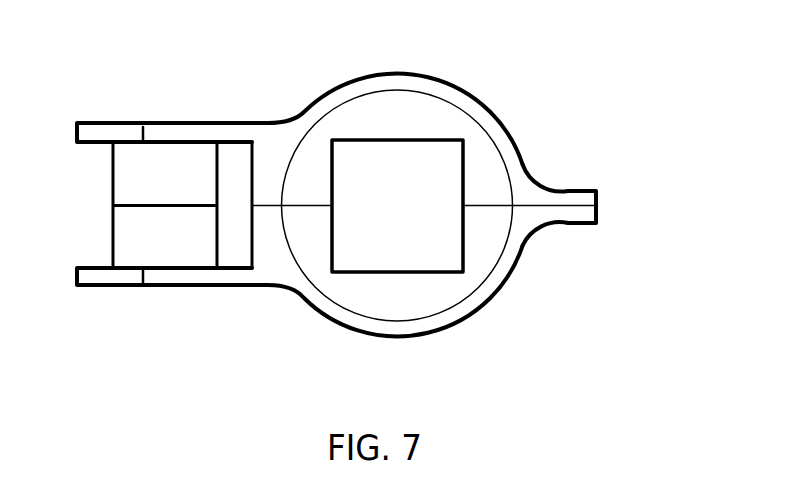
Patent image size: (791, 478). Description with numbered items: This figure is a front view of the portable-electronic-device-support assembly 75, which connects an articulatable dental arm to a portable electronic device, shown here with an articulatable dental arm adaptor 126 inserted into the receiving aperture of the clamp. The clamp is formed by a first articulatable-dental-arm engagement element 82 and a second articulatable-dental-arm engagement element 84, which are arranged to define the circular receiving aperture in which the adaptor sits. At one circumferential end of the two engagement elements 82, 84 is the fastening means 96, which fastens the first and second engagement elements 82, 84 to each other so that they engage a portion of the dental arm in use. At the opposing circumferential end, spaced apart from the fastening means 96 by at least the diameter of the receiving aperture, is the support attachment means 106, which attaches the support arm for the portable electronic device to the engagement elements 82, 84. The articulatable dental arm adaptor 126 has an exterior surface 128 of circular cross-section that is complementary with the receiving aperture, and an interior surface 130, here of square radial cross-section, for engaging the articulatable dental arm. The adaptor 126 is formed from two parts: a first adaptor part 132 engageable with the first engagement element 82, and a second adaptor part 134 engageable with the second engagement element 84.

The portable-electronic-device-support assembly 75 is at (650, 153).
The first articulatable-dental-arm engagement element 82 is at (400, 333).
The second articulatable-dental-arm engagement element 84 is at (393, 82).
The fastening means 96 is at (596, 207).
The support attachment means 106 is at (123, 215).
The articulatable dental arm adaptor 126 is at (312, 169).
The exterior surface 128 is at (480, 125).
The interior surface 130 is at (405, 140).
The first adaptor part 132 is at (440, 300).
The second adaptor part 134 is at (363, 110).